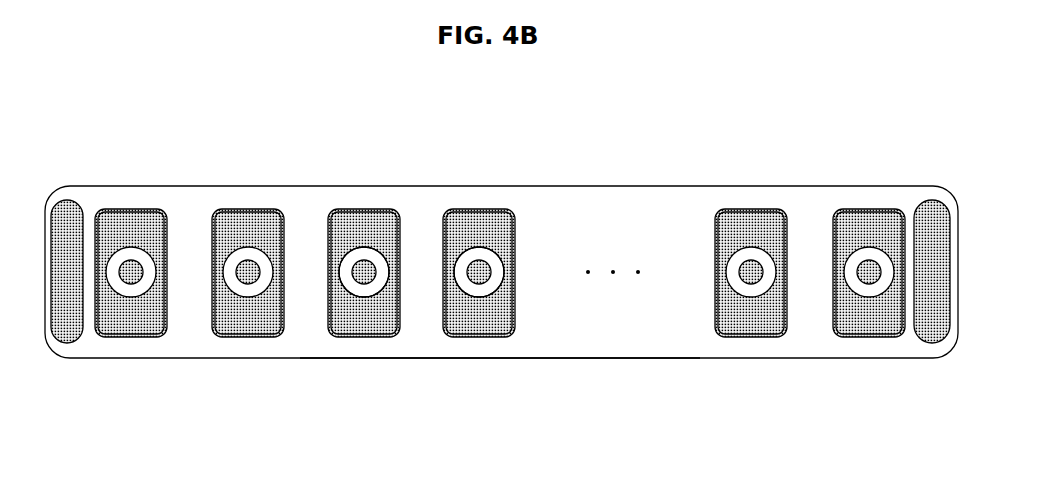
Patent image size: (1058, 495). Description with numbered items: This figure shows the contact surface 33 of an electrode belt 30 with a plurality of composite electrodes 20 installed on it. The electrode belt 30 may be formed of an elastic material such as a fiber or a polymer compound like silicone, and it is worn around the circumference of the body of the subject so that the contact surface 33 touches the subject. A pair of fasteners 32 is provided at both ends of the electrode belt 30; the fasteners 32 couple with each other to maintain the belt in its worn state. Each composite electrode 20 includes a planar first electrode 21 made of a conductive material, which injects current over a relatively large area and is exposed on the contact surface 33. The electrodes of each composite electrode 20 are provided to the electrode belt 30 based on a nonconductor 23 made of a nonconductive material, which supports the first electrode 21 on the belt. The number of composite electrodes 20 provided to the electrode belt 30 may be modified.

The composite electrode 20 is at (229, 342).
The first electrode 21 is at (463, 325).
The nonconductor 23 is at (368, 255).
The electrode belt 30 is at (604, 189).
The fastener 32 is at (69, 200).
The contact surface 33 is at (621, 346).